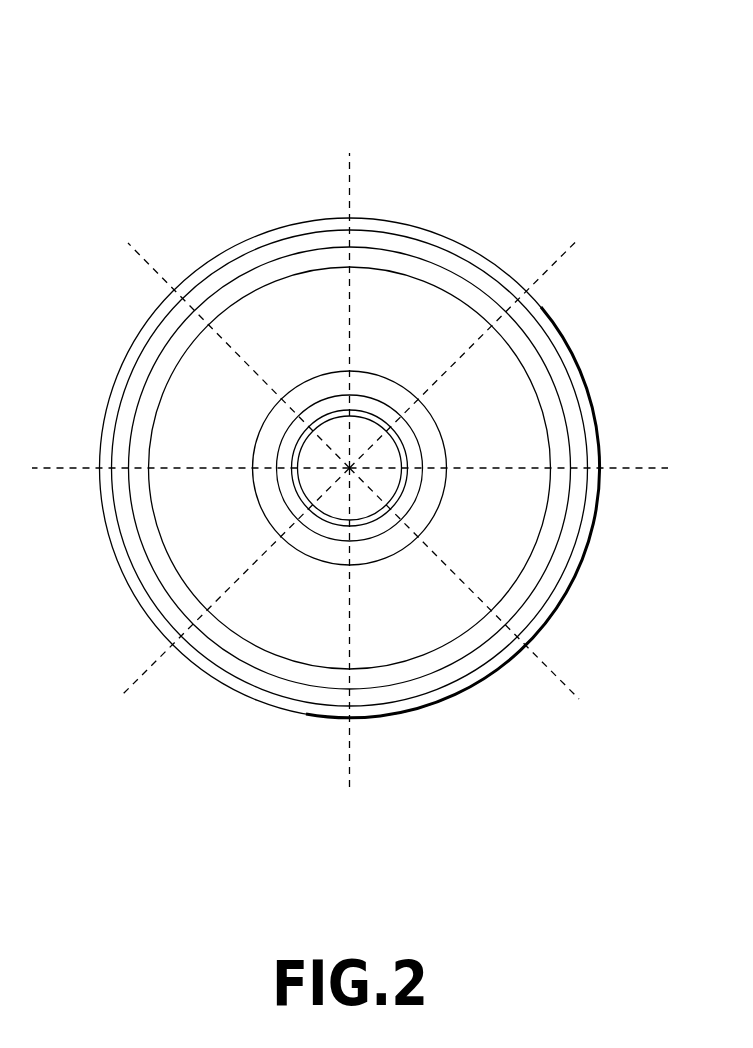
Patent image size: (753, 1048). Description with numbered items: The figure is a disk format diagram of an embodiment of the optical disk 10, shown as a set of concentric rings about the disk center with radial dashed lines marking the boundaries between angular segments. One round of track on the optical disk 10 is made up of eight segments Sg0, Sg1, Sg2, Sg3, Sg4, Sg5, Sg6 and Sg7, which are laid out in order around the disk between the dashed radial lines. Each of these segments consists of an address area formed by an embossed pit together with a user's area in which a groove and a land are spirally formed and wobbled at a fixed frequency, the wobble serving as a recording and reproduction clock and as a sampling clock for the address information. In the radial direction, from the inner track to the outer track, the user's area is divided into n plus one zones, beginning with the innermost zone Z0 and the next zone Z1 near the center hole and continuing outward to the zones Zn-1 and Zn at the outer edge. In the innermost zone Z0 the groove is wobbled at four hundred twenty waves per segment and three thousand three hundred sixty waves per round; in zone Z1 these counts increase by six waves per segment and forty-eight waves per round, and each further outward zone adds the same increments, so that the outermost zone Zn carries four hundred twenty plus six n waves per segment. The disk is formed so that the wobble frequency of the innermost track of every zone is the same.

The optical disk 10 is at (578, 115).
The segment Sg0 is at (407, 310).
The segment Sg1 is at (498, 354).
The segment Sg2 is at (509, 531).
The segment Sg3 is at (465, 606).
The segment Sg4 is at (281, 629).
The segment Sg5 is at (204, 582).
The segment Sg6 is at (191, 406).
The segment Sg7 is at (239, 325).
The innermost zone Z0 is at (362, 402).
The zone Z1 is at (400, 393).
The zone Zn-1 is at (448, 279).
The outermost zone Zn is at (497, 287).